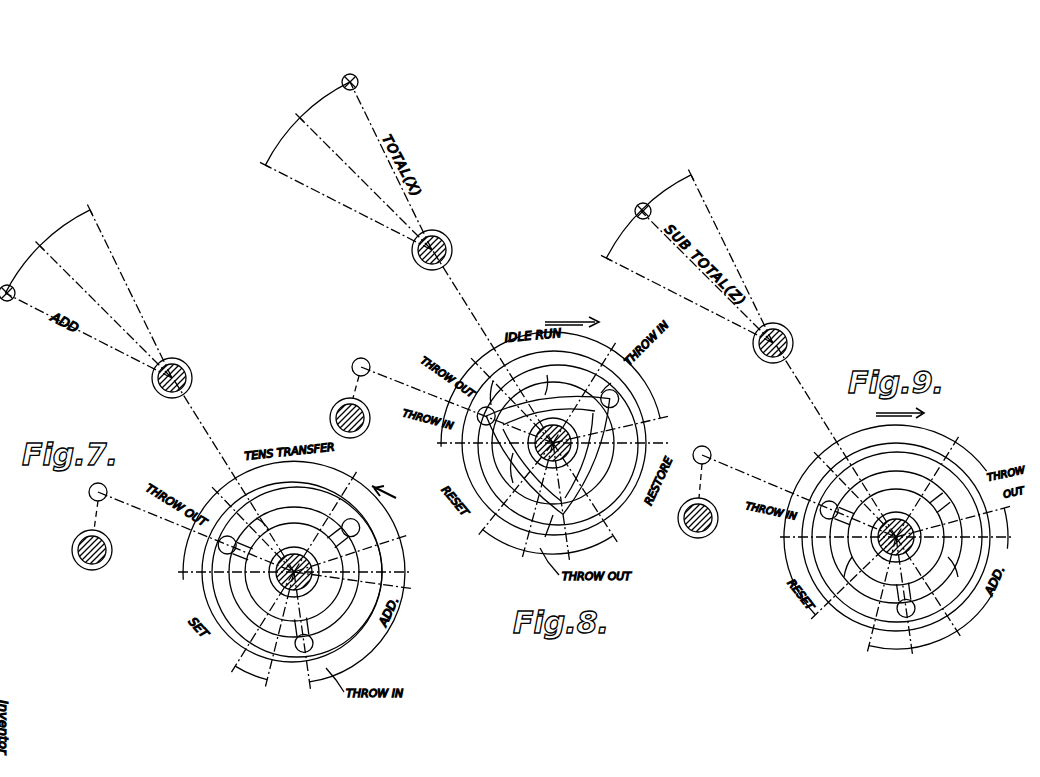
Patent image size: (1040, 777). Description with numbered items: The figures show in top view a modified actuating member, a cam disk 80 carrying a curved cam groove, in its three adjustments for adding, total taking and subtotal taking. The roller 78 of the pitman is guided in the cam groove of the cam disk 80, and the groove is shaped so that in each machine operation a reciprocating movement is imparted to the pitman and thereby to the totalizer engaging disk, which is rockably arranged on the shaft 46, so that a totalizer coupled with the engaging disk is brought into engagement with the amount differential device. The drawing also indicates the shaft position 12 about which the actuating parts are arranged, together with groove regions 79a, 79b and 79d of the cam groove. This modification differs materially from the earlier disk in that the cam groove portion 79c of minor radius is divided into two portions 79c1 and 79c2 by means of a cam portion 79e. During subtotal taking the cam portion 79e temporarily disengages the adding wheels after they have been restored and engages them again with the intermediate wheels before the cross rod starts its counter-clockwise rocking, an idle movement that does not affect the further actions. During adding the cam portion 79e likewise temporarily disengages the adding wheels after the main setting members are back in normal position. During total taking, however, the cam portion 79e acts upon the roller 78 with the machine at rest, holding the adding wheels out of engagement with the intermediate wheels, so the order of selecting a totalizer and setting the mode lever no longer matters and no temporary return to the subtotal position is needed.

In FIG. 7, the roller 12 is at (188, 376).
In FIG. 8, the roller 12 is at (448, 243).
In FIG. 9, the roller 12 is at (790, 330).
In FIG. 7, the shaft 46 is at (110, 543).
In FIG. 8, the shaft 46 is at (369, 413).
In FIG. 9, the shaft 46 is at (715, 513).
In FIG. 7, the roller 78 is at (210, 550).
In FIG. 8, the roller 78 is at (468, 424).
In FIG. 9, the roller 78 is at (814, 517).
In FIG. 7, the cam body 79a is at (287, 572).
In FIG. 8, the cam body 79a is at (549, 455).
In FIG. 9, the cam body 79a is at (896, 525).
In FIG. 7, the cam arm 79b is at (321, 646).
In FIG. 8, the cam arm 79b is at (597, 380).
In FIG. 9, the cam arm 79b is at (817, 533).
In FIG. 7, the cam groove portion of minor radius 79c is at (355, 569).
In FIG. 9, the cam groove portion of minor radius 79c is at (965, 573).
In FIG. 8, the cam groove portion 79c1 is at (552, 372).
In FIG. 9, the cam groove portion 79c1 is at (839, 580).
In FIG. 7, the cam groove portion 79c2 is at (282, 506).
In FIG. 8, the cam groove portion 79c2 is at (499, 479).
In FIG. 7, the cam arm 79d is at (244, 528).
In FIG. 8, the cam arm 79d is at (546, 532).
In FIG. 9, the cam arm 79d is at (970, 514).
In FIG. 7, the cam portion 79e is at (362, 549).
In FIG. 8, the cam portion 79e is at (487, 385).
In FIG. 9, the cam portion 79e is at (894, 616).
In FIG. 7, the cam disk 80 is at (330, 648).
In FIG. 8, the cam disk 80 is at (619, 457).
In FIG. 9, the cam disk 80 is at (873, 614).